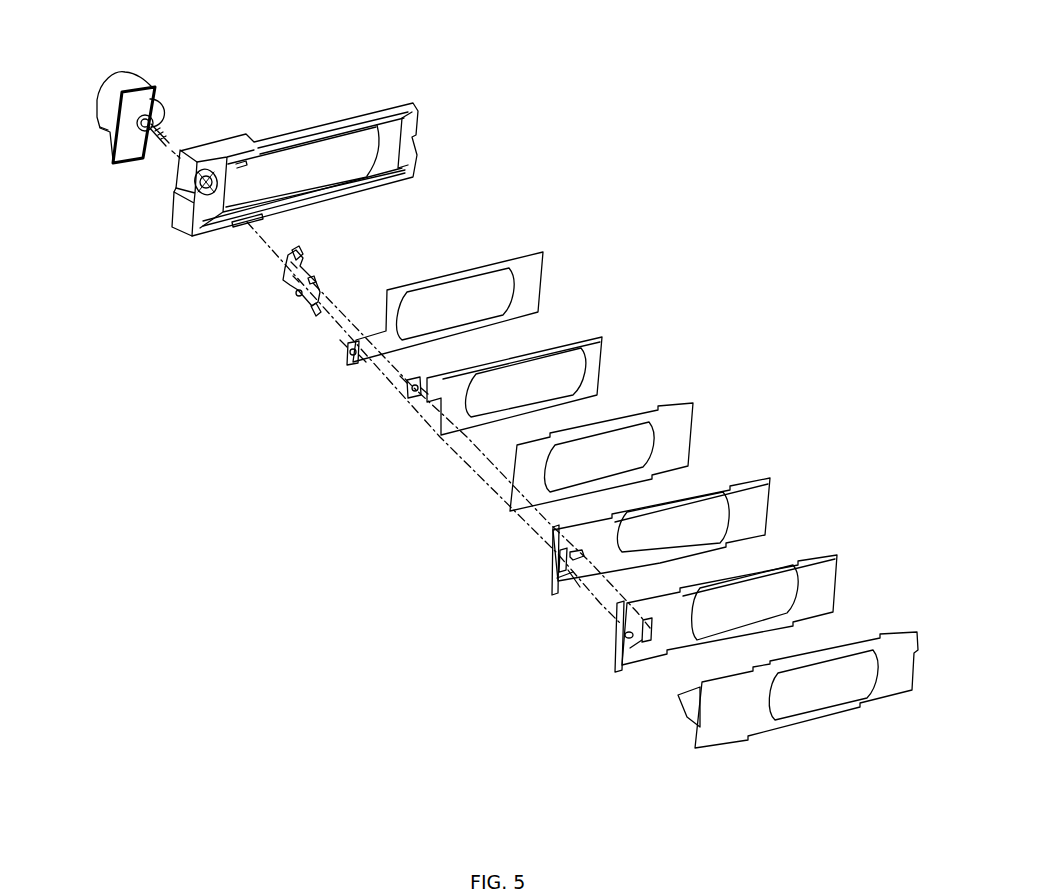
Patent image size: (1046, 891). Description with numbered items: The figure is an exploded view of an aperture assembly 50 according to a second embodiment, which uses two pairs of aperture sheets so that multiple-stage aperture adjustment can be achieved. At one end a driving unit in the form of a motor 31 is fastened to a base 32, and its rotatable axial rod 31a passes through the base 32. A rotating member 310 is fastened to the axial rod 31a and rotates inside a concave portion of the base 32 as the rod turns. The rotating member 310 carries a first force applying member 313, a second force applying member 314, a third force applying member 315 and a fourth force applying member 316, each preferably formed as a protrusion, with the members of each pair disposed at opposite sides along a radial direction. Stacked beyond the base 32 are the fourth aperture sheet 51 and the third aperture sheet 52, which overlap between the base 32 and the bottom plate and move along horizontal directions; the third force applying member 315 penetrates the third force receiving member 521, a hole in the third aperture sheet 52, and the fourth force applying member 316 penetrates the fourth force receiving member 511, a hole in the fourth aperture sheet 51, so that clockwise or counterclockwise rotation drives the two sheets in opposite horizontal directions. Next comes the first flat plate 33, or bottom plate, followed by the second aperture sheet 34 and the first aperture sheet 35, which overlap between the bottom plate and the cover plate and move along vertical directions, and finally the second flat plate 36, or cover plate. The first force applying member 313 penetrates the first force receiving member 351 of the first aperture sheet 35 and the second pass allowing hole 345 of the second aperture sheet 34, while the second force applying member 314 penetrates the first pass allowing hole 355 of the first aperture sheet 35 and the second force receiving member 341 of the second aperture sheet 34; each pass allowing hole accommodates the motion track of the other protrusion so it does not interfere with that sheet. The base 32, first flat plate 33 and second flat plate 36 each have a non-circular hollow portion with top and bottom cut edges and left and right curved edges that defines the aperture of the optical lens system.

The aperture assembly 50 is at (346, 60).
The motor 31 is at (98, 92).
The axial rod 31a is at (162, 122).
The base 32 is at (416, 166).
The rotating member 310 is at (283, 272).
The first force applying member 313 is at (300, 293).
The second force applying member 314 is at (313, 283).
The third force applying member 315 is at (302, 262).
The fourth force applying member 316 is at (314, 313).
The fourth aperture sheet 51 is at (542, 297).
The fourth force receiving member 511 is at (349, 357).
The third aperture sheet 52 is at (601, 378).
The third force receiving member 521 is at (405, 393).
The first flat plate 33 is at (694, 448).
The second aperture sheet 34 is at (771, 517).
The second force receiving member 341 is at (580, 578).
The second pass allowing hole 345 is at (552, 560).
The first aperture sheet 35 is at (838, 596).
The first force receiving member 351 is at (620, 642).
The first pass allowing hole 355 is at (646, 650).
The second flat plate 36 is at (917, 680).